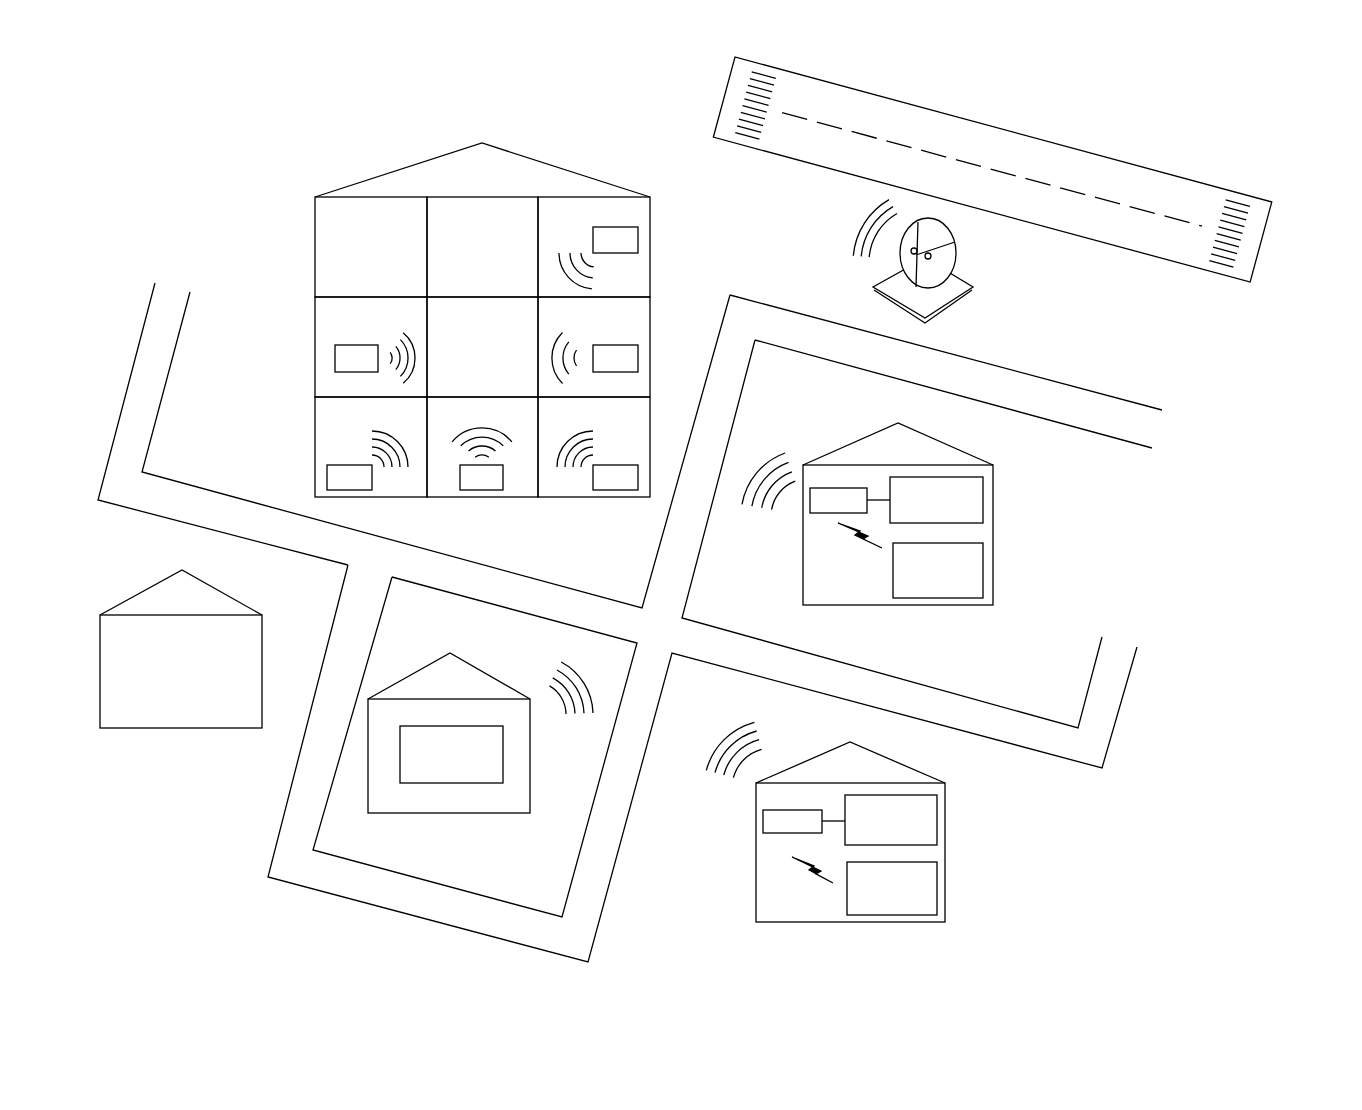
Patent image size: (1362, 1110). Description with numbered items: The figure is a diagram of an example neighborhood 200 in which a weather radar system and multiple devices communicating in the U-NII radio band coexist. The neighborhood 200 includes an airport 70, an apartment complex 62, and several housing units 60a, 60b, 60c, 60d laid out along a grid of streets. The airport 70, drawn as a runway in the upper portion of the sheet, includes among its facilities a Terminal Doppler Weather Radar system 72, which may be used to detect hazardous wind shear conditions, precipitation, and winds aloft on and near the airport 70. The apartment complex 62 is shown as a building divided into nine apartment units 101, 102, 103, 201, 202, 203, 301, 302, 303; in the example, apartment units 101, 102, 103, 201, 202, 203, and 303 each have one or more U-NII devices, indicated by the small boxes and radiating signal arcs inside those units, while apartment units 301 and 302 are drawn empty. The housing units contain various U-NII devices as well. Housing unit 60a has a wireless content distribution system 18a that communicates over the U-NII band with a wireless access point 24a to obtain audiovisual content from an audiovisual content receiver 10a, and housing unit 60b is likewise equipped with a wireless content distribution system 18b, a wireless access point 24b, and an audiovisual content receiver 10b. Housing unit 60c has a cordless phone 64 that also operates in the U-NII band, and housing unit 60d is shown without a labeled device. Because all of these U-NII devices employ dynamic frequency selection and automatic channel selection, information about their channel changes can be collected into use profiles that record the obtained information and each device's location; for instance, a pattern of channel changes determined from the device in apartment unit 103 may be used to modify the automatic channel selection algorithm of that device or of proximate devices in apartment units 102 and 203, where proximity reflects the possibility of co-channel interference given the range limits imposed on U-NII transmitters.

The neighborhood 200 is at (1248, 103).
The apartment complex 62 is at (402, 169).
The apartment unit 301 is at (371, 247).
The apartment unit 302 is at (482, 247).
The apartment unit 303 is at (594, 247).
The apartment unit 201 is at (371, 347).
The apartment unit 202 is at (482, 347).
The apartment unit 203 is at (594, 347).
The apartment unit 101 is at (371, 447).
The apartment unit 102 is at (482, 447).
The apartment unit 103 is at (594, 447).
The airport 70 is at (1178, 176).
The Terminal Doppler Weather Radar system 72 is at (871, 288).
The housing unit 60a is at (993, 560).
The wireless access point 24a is at (838, 488).
The audiovisual content receiver 10a is at (986, 505).
The wireless content distribution system 18a is at (950, 598).
The housing unit 60b is at (946, 836).
The wireless access point 24b is at (763, 822).
The audiovisual content receiver 10b is at (941, 806).
The wireless content distribution system 18b is at (892, 918).
The housing unit 60c is at (503, 814).
The cordless phone 64 is at (436, 784).
The housing unit 60d is at (179, 729).